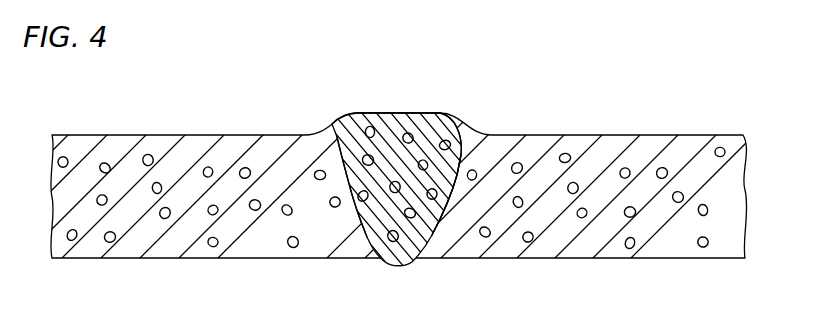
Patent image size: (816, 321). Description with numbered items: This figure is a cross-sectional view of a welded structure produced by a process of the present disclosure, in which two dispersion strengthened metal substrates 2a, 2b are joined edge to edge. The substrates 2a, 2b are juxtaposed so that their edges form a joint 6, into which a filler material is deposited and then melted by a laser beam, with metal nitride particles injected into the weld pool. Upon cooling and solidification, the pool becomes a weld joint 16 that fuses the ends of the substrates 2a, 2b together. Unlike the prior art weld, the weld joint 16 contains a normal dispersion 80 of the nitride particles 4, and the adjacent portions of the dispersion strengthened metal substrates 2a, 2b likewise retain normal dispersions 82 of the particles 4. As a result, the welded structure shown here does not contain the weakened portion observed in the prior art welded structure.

The dispersion strengthened metal substrate 2a is at (135, 242).
The dispersion strengthened metal substrate 2b is at (590, 237).
The nitride particles 4 is at (408, 132).
The joint 6 is at (362, 243).
The weld joint 16 is at (428, 142).
The normal dispersion 80 is at (388, 135).
The normal dispersions 82 is at (307, 152).